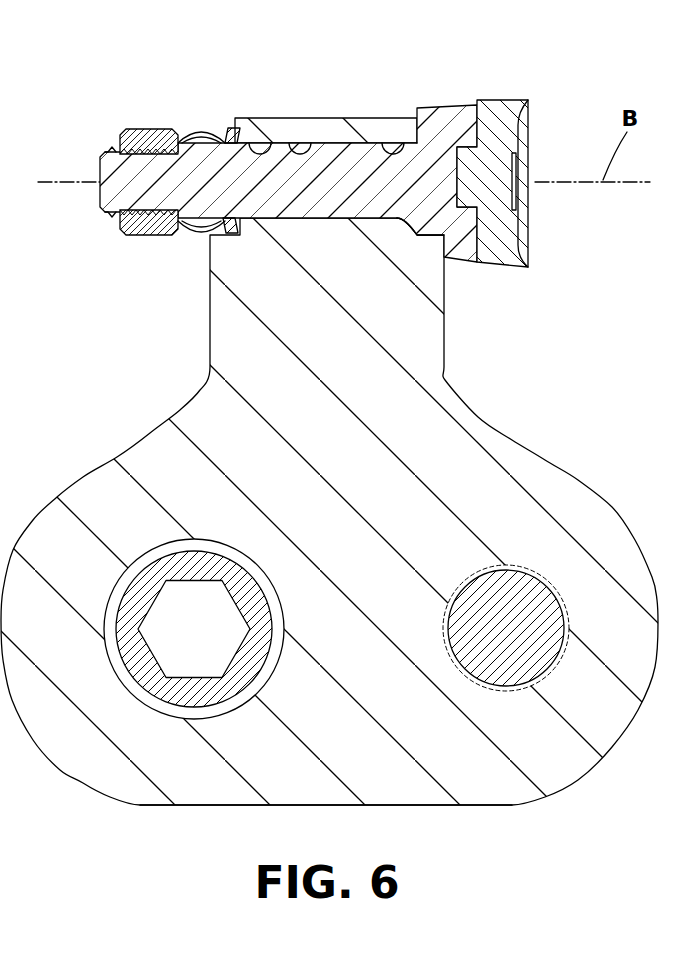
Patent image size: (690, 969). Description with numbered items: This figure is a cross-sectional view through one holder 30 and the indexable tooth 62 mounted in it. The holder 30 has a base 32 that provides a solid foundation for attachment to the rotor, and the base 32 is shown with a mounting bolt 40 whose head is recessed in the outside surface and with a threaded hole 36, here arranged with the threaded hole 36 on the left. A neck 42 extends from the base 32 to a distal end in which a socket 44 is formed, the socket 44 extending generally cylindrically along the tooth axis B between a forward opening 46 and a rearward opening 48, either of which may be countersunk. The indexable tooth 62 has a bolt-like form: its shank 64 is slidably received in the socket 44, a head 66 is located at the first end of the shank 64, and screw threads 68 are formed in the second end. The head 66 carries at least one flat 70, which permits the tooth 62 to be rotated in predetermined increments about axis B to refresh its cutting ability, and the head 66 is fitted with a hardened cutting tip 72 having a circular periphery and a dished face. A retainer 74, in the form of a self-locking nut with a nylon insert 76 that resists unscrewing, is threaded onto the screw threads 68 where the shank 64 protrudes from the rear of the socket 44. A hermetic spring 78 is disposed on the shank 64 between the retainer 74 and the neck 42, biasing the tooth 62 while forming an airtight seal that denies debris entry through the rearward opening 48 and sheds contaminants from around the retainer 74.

The holder 30 is at (540, 450).
The base 32 is at (202, 795).
The threaded hole 36 is at (535, 672).
The mounting bolt 40 is at (200, 577).
The neck 42 is at (210, 293).
The socket 44 is at (308, 143).
The forward opening 46 is at (383, 148).
The rearward opening 48 is at (262, 140).
The indexable tooth 62 is at (536, 88).
The shank 64 is at (323, 218).
The head 66 is at (460, 107).
The screw threads 68 is at (112, 217).
The flat 70 is at (430, 237).
The cutting tip 72 is at (530, 140).
The retainer 74 is at (147, 128).
The nylon insert 76 is at (118, 148).
The hermetic spring 78 is at (193, 125).